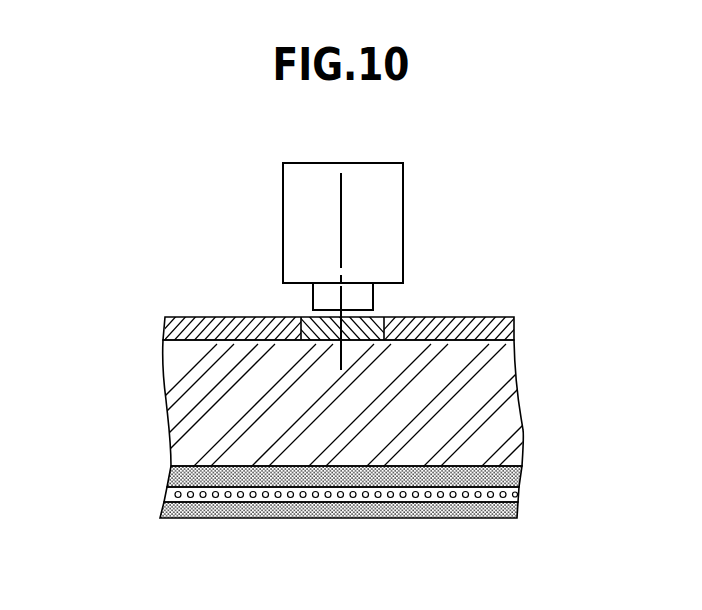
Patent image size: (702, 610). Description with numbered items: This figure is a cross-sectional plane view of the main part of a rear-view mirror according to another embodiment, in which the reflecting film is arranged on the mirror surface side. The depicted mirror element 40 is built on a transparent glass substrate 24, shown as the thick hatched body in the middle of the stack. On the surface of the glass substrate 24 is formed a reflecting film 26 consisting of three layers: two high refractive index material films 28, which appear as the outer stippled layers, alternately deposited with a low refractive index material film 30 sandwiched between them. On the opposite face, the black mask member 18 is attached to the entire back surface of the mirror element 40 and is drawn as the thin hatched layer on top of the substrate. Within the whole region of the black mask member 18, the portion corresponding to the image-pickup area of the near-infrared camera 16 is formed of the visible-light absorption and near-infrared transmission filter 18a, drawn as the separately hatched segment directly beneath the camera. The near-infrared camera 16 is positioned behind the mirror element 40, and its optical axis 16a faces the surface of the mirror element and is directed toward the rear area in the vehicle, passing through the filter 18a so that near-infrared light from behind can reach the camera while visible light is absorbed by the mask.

The near-infrared camera 16 is at (403, 166).
The optical axis 16a is at (342, 208).
The black mask member 18 is at (516, 319).
The visible-light absorption and near-infrared transmission filter 18a is at (377, 318).
The transparent glass substrate 24 is at (168, 400).
The reflecting film 26 is at (281, 503).
The high refractive index material film 28 is at (166, 477).
The low refractive index material film 30 is at (163, 497).
The mirror element 40 is at (359, 404).